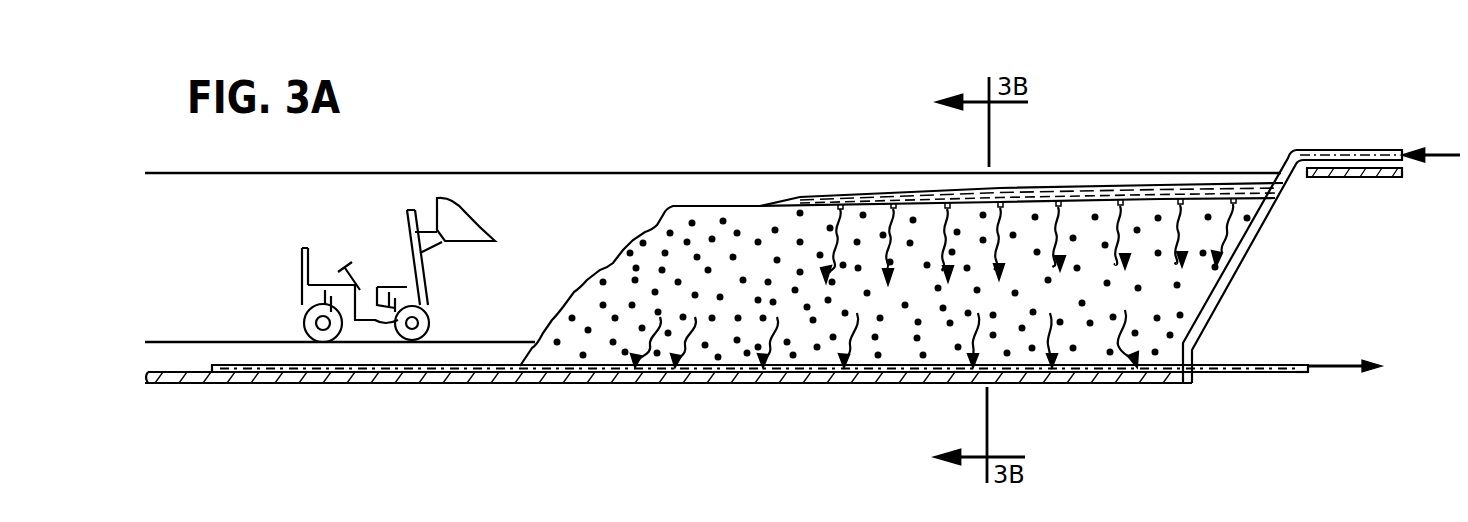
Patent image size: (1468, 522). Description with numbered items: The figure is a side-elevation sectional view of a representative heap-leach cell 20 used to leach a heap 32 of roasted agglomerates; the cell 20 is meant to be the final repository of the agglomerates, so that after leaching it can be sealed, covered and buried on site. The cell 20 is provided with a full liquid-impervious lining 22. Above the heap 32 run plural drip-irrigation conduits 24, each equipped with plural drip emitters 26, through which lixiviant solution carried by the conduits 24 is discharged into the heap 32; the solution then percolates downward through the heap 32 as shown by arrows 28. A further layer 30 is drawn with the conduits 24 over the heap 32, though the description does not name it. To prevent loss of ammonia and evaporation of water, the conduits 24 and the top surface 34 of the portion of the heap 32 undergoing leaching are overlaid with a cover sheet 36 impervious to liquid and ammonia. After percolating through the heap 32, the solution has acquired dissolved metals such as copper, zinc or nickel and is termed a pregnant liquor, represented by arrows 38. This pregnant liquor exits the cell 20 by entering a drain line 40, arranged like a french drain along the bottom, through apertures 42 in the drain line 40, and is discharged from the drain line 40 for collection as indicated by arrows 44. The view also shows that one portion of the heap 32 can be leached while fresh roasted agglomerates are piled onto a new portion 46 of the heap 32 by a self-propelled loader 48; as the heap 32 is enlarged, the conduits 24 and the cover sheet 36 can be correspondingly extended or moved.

The leaching cell 20 is at (519, 158).
The liquid-impervious lining 22 is at (1362, 178).
The drip-irrigation conduit 24 is at (1320, 152).
The drip emitter 26 is at (950, 206).
The arrows indicating lixiviant percolation 28 is at (1435, 150).
The fabric layer 30 is at (1012, 222).
The heap 32 is at (1192, 288).
The top surface 34 is at (1143, 197).
The cover sheet 36 is at (1220, 184).
The arrows indicating pregnant liquor 38 is at (693, 346).
The drain line 40 is at (1268, 362).
The apertures 42 is at (885, 372).
The arrows indicating discharge 44 is at (1320, 372).
The new portion of the heap 46 is at (620, 276).
The self-propelled loader 48 is at (312, 302).